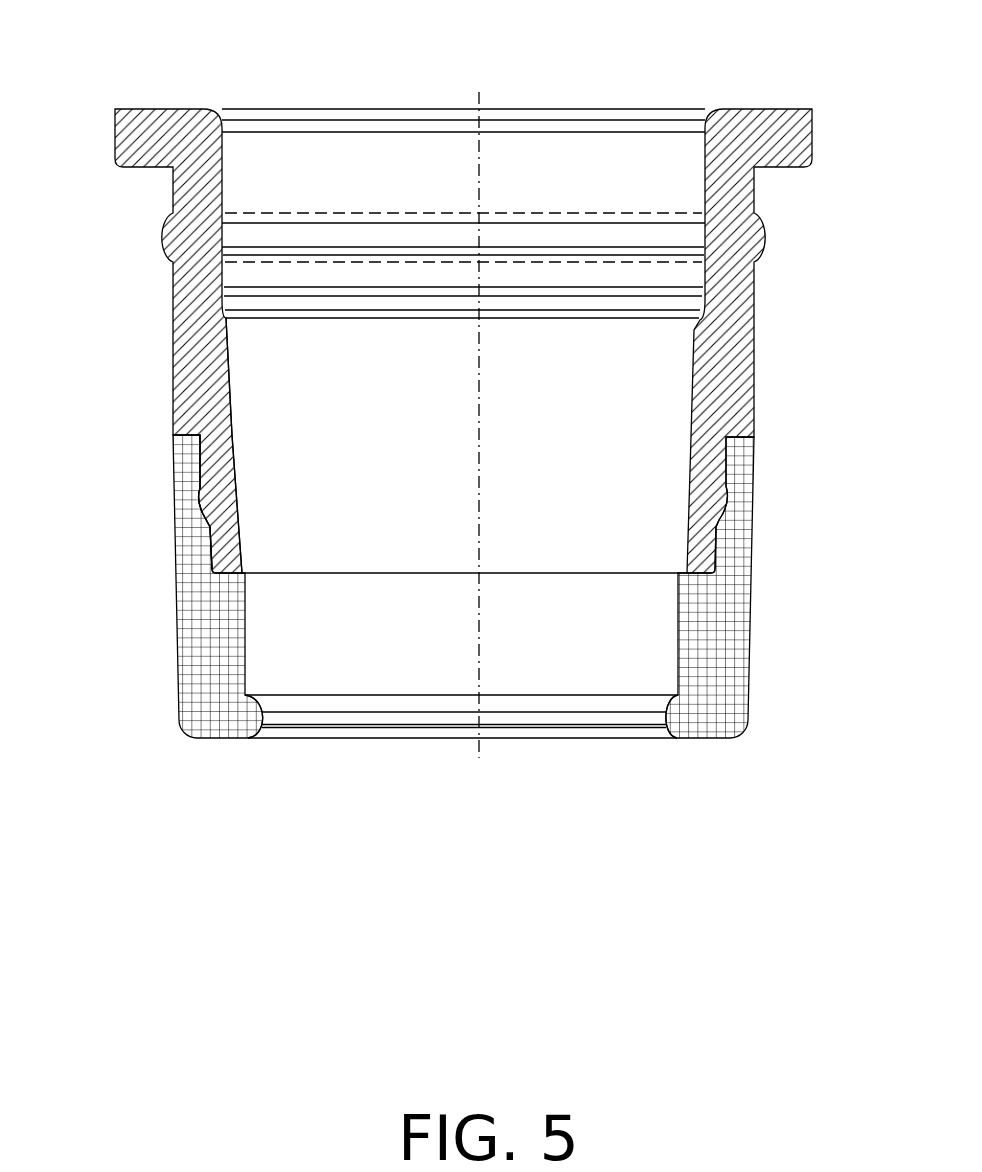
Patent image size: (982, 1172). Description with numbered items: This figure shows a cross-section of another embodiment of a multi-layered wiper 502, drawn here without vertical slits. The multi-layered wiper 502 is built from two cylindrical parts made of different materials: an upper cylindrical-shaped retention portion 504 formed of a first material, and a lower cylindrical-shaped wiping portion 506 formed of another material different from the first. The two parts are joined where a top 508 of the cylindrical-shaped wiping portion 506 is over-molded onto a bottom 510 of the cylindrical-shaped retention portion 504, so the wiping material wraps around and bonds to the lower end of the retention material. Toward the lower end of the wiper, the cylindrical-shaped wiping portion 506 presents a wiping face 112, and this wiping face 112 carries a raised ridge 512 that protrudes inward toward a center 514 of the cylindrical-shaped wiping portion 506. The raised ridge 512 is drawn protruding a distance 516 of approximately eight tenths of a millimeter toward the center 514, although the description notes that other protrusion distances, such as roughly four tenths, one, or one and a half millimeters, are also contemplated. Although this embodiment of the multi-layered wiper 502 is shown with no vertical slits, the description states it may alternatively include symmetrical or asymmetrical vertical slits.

The multi-layered wiper 502 is at (491, 401).
The cylindrical-shaped retention portion 504 is at (758, 437).
The cylindrical-shaped wiping portion 506 is at (197, 738).
The top of the cylindrical-shaped wiping portion 508 is at (210, 425).
The bottom of the cylindrical-shaped retention portion 510 is at (249, 435).
The wiping face 112 is at (294, 706).
The raised ridge 512 is at (670, 702).
The center of the cylindrical-shaped wiping portion 514 is at (479, 436).
The distance 516 is at (283, 780).